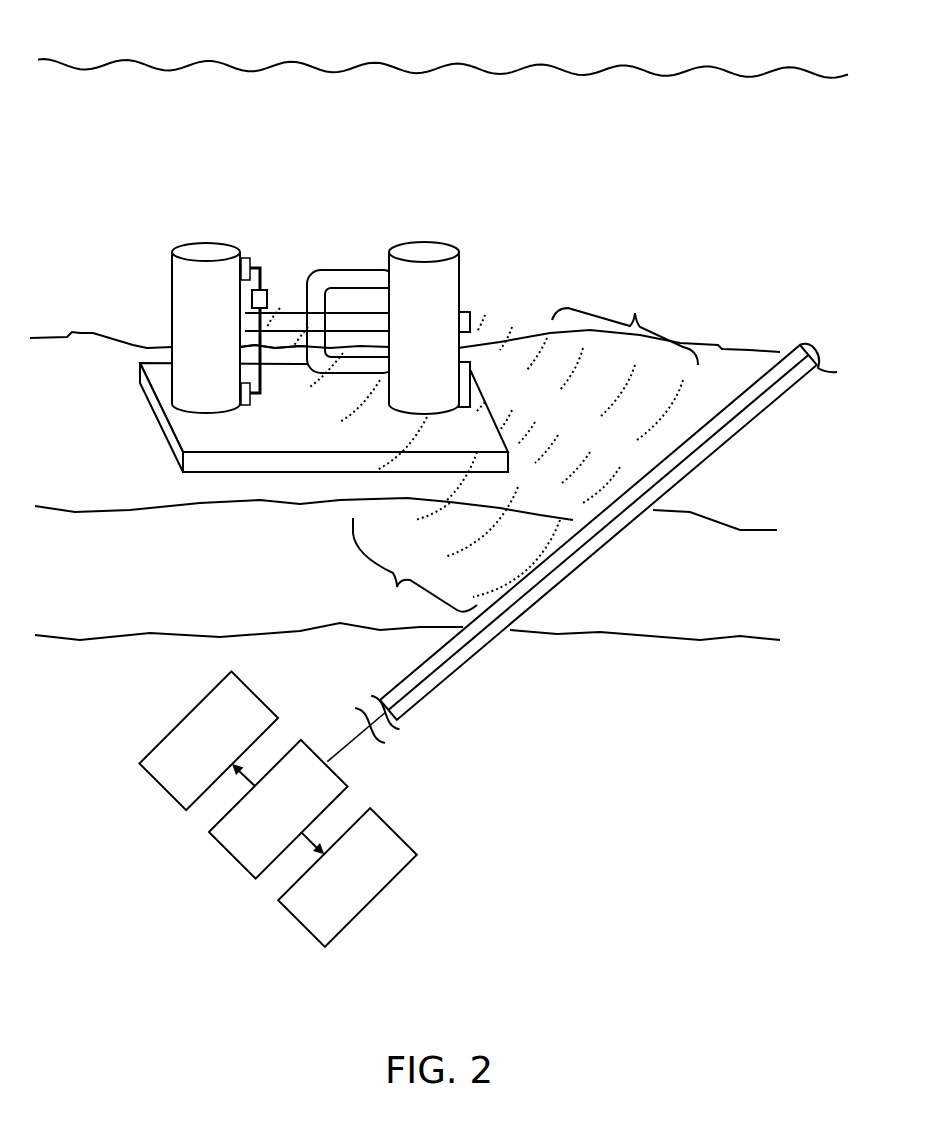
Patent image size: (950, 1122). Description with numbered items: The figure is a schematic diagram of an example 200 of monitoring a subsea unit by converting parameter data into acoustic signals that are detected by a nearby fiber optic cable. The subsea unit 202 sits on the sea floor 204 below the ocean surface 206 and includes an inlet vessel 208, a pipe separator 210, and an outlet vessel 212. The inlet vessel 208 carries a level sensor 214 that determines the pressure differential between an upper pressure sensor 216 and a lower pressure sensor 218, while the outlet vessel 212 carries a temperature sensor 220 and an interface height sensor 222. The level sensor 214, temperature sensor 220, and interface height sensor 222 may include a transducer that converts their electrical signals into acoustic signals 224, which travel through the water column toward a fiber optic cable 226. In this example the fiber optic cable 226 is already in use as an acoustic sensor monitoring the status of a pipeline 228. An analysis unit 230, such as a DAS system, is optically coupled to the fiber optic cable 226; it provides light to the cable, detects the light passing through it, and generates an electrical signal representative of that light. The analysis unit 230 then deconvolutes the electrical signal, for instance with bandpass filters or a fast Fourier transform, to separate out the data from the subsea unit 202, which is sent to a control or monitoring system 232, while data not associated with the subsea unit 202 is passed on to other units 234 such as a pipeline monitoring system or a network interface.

The example of monitoring a subsea unit 200 is at (418, 1042).
The subsea unit 202 is at (349, 304).
The sea floor 204 is at (81, 333).
The ocean surface 206 is at (462, 68).
The inlet vessel 208 is at (185, 348).
The pipe separator 210 is at (318, 322).
The outlet vessel 212 is at (403, 348).
The level sensor 214 is at (266, 289).
The upper pressure sensor 216 is at (250, 258).
The lower pressure sensor 218 is at (247, 405).
The temperature sensor 220 is at (466, 387).
The interface height sensor 222 is at (464, 312).
The acoustic signals 224 is at (482, 448).
The fiber optic cable 226 is at (604, 537).
The pipeline 228 is at (597, 558).
The analysis unit 230 is at (278, 809).
The control or monitoring system 232 is at (347, 877).
The other units 234 is at (208, 740).